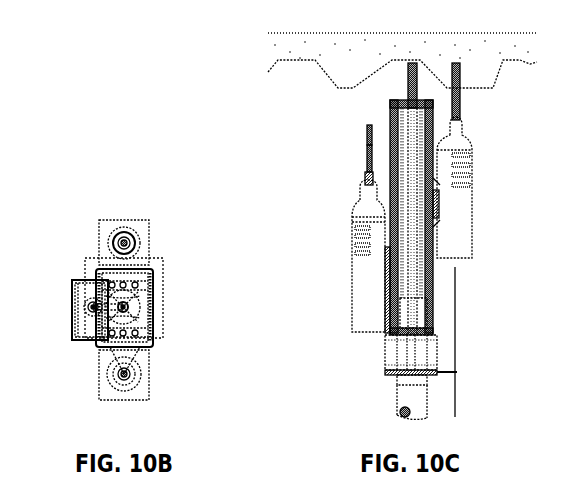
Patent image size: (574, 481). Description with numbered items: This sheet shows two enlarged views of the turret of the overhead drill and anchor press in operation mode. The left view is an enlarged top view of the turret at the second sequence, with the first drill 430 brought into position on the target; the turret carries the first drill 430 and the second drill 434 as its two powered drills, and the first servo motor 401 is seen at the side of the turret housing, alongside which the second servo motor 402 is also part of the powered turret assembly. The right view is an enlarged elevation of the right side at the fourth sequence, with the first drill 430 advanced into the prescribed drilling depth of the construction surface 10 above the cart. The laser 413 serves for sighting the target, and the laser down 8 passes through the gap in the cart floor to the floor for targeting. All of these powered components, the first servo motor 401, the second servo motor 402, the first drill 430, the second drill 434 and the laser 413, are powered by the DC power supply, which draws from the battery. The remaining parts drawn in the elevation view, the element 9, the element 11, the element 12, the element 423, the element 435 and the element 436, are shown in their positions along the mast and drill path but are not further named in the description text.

In FIG. 10C, the laser down 8 is at (458, 390).
In FIG. 10C, the outer pipe / casing 9 is at (458, 348).
In FIG. 10C, the construction surface 10 is at (342, 68).
In FIG. 10C, the rod 11 is at (362, 137).
In FIG. 10C, the rod section 12 is at (362, 160).
In FIG. 10B, the servo motor#1 401 is at (73, 336).
In FIG. 10C, the servo motor#2 402 is at (430, 346).
In FIG. 10C, the laser 413 is at (458, 369).
In FIG. 10C, the inner rod 423 is at (405, 70).
In FIG. 10B, the drill #1 430 is at (154, 379).
In FIG. 10C, the drill #1 430 is at (473, 182).
In FIG. 10B, the drill #2 434 is at (154, 247).
In FIG. 10C, the drill #2 434 is at (350, 247).
In FIG. 10C, the valve 435 is at (362, 178).
In FIG. 10C, the rod 436 is at (462, 72).